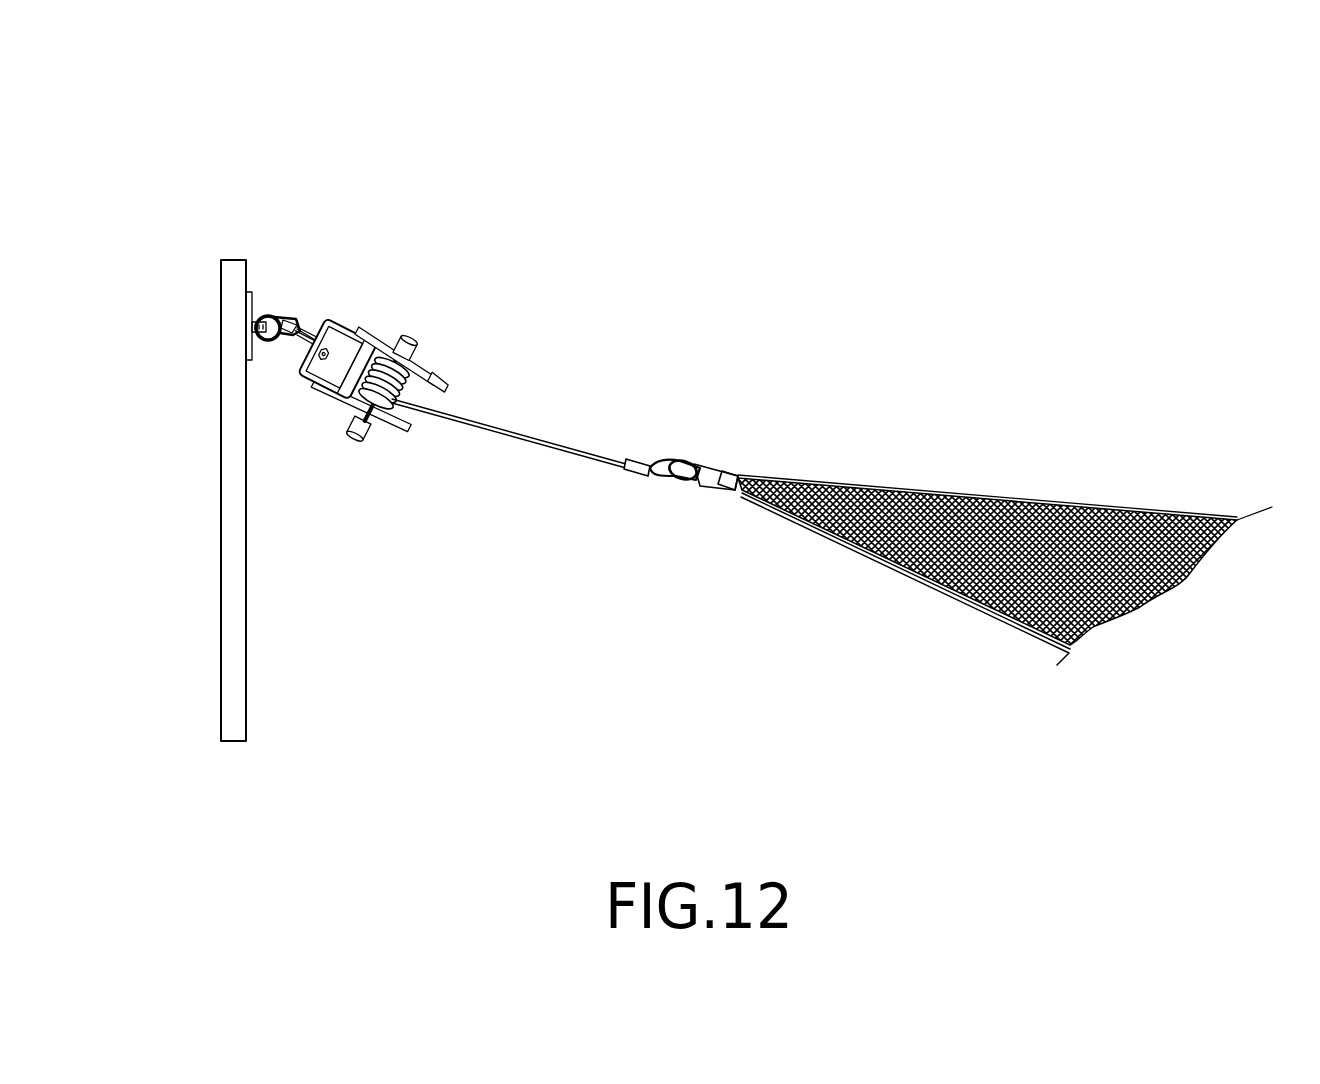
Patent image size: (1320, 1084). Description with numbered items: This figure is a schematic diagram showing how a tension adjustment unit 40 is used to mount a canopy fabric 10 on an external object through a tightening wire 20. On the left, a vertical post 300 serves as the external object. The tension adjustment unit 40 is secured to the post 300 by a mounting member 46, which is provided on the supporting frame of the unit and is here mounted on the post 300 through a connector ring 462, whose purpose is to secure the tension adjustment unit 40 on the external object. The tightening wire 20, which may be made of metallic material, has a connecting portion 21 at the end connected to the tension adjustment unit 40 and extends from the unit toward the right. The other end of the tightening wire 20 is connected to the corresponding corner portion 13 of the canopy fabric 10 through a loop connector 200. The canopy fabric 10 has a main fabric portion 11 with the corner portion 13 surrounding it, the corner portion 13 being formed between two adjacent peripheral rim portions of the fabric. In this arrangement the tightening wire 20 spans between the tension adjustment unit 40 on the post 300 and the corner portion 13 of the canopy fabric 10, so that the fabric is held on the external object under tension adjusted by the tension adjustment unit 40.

The canopy fabric 10 is at (962, 510).
The main fabric portion 11 is at (925, 560).
The corner portion 13 is at (785, 470).
The tightening wire 20 is at (527, 420).
The loop connector 200 is at (658, 463).
The connecting portion 21 is at (417, 368).
The tension adjustment unit 40 is at (440, 262).
The mounting member 46 is at (292, 323).
The connector ring 462 is at (264, 318).
The post 300 is at (238, 645).